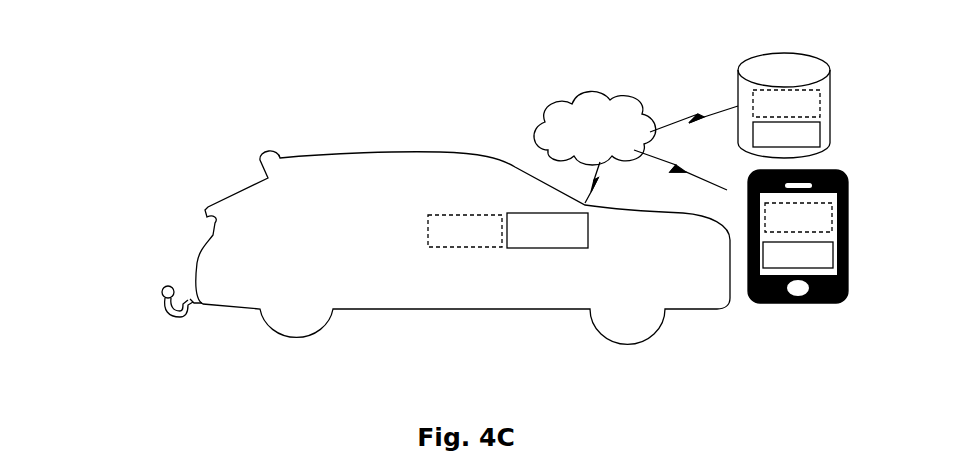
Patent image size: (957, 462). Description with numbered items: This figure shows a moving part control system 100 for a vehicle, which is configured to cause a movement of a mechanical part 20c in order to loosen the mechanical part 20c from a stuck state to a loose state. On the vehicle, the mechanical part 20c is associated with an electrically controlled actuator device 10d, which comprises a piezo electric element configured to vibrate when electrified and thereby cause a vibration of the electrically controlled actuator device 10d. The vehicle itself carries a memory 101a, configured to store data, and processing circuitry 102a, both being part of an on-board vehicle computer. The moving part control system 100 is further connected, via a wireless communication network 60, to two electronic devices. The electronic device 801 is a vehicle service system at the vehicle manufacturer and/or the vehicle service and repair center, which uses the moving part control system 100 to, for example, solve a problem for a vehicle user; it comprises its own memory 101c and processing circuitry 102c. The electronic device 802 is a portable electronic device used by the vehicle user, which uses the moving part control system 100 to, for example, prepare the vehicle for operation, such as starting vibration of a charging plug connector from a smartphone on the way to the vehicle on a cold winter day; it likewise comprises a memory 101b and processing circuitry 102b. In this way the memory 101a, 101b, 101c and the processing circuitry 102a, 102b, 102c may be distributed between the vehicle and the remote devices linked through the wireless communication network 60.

The moving part control system 100 is at (160, 182).
The electrically controlled actuator device 10d is at (200, 300).
The mechanical part 20c is at (160, 327).
The wireless communication network 60 is at (636, 147).
The memory 101a is at (465, 231).
The processing circuitry 102a is at (547, 230).
The electronic device 801 is at (758, 87).
The memory 101c is at (786, 103).
The processing circuitry 102c is at (786, 134).
The electronic device 802 is at (798, 267).
The memory 101b is at (798, 217).
The processing circuitry 102b is at (798, 255).